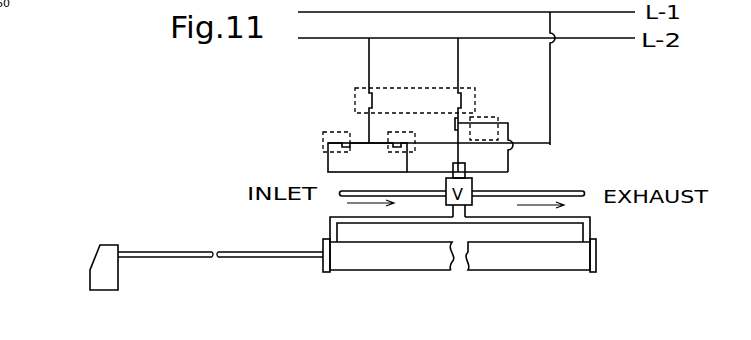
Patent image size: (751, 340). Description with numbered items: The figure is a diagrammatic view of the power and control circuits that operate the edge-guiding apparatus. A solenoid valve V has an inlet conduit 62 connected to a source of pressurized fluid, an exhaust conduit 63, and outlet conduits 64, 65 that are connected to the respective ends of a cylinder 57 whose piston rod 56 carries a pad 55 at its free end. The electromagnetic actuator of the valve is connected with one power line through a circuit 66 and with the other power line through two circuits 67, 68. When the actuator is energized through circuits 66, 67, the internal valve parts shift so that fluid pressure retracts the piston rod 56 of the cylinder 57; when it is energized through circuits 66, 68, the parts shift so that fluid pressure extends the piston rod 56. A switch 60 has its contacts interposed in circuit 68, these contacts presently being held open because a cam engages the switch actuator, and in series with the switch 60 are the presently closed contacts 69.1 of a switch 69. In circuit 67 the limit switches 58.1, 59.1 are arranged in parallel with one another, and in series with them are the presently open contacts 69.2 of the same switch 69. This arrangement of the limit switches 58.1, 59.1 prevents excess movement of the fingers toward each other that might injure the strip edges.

The pad 55 is at (108, 248).
The piston rod 56 is at (205, 250).
The cylinder 57 is at (493, 260).
The limit switch 58.1 is at (343, 132).
The limit switch 59.1 is at (407, 133).
The switch 60 is at (491, 122).
The inlet conduit 62 is at (341, 191).
The exhaust conduit 63 is at (530, 191).
The outlet conduit 64 is at (330, 220).
The outlet conduit 65 is at (587, 226).
The circuit 66 is at (551, 80).
The circuit 67 is at (421, 172).
The circuit 68 is at (461, 127).
The switch 69 is at (430, 65).
The contacts 69.1 is at (463, 93).
The contacts 69.2 is at (363, 93).